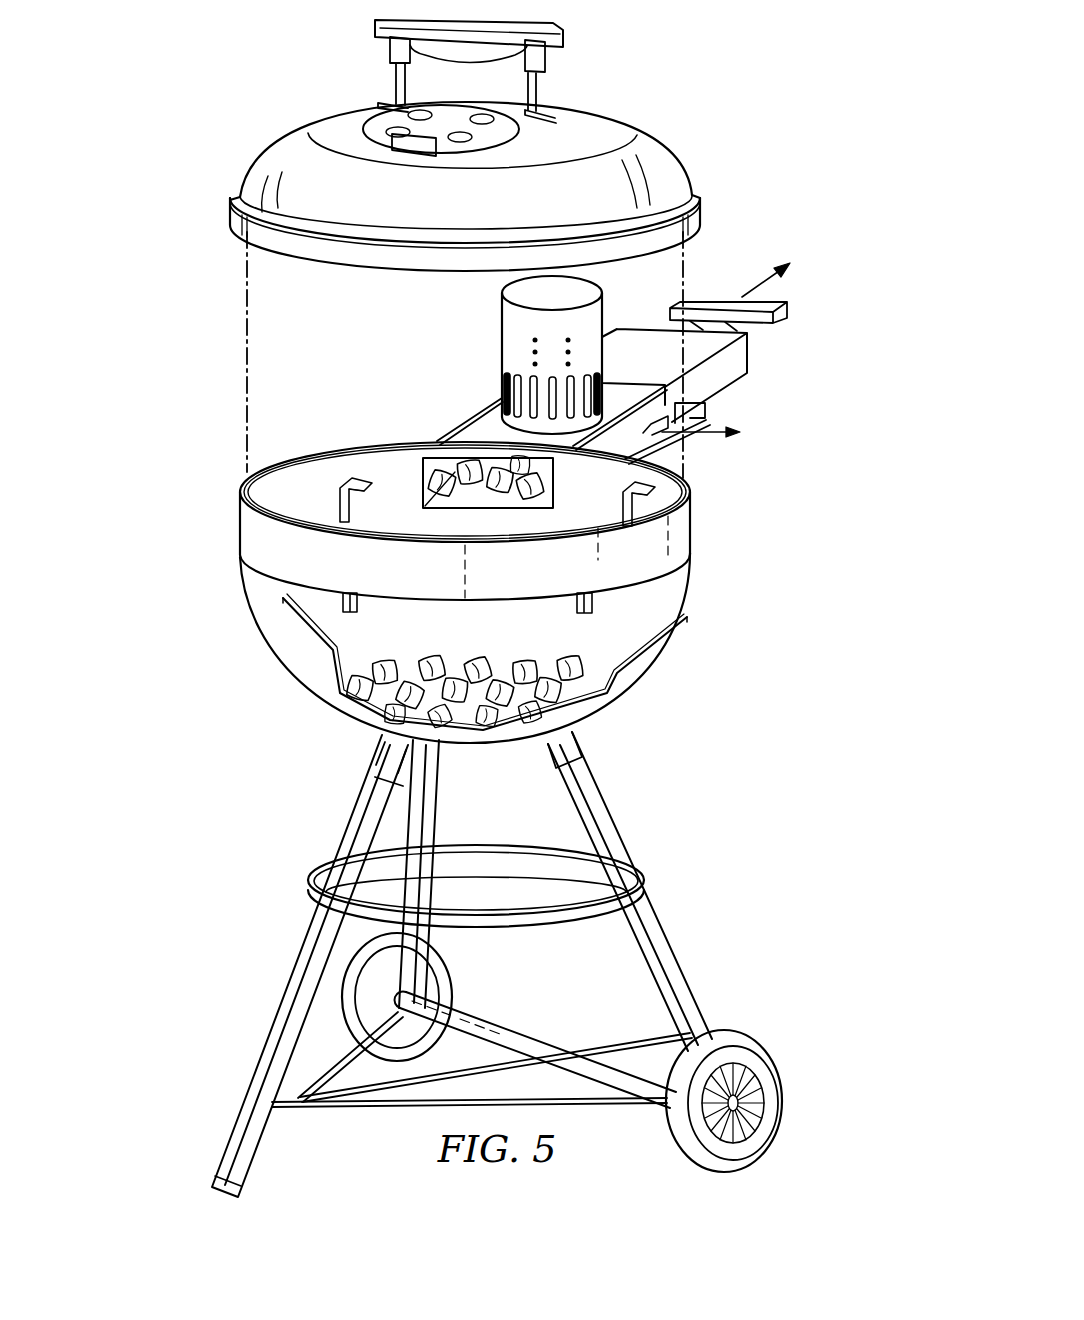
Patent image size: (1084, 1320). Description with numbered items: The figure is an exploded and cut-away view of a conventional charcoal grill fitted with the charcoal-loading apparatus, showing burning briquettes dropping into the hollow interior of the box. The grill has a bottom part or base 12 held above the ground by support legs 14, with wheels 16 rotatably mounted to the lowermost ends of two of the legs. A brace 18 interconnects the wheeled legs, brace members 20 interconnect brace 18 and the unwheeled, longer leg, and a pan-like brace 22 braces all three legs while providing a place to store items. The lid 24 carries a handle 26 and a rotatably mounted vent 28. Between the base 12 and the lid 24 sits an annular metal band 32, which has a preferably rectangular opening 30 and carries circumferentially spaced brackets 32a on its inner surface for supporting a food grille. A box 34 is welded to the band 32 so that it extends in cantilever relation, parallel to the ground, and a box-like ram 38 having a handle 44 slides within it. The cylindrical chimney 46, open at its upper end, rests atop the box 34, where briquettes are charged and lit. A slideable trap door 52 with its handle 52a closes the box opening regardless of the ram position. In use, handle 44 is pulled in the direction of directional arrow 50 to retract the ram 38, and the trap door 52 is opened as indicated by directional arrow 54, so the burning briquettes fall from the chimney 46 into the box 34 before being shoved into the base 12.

The base 12 is at (276, 650).
The support legs 14 is at (440, 787).
The wheels 16 is at (448, 960).
The brace 18 is at (560, 1042).
The brace members 20 is at (327, 1073).
The pan-like brace 22 is at (488, 846).
The lid 24 is at (449, 227).
The handle 26 is at (558, 28).
The vent 28 is at (377, 128).
The opening 30 is at (553, 484).
The annular metal band 32 is at (262, 540).
The brackets 32a is at (362, 482).
The box 34 is at (474, 413).
The ram 38 is at (733, 364).
The handle 44 is at (777, 303).
The chimney 46 is at (502, 333).
The directional arrow 50 is at (764, 281).
The slideable trap door 52 is at (648, 452).
The handle 52a is at (690, 400).
The directional arrow 54 is at (706, 435).